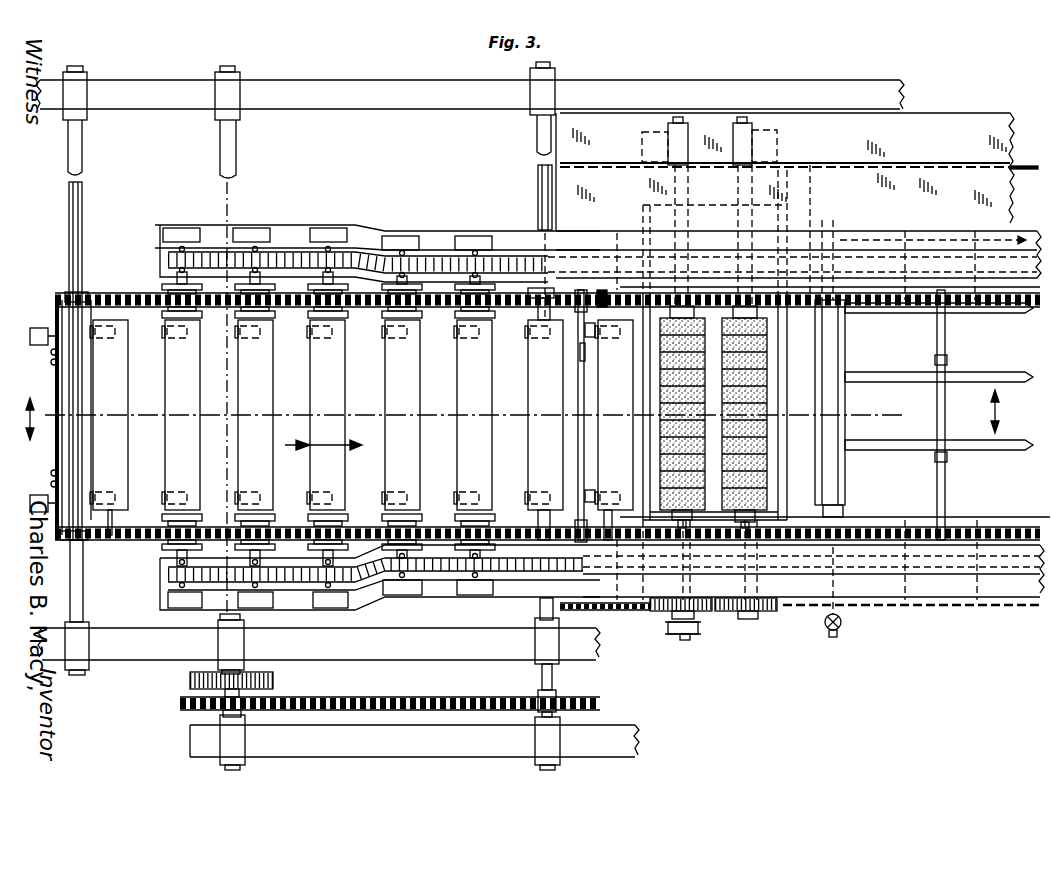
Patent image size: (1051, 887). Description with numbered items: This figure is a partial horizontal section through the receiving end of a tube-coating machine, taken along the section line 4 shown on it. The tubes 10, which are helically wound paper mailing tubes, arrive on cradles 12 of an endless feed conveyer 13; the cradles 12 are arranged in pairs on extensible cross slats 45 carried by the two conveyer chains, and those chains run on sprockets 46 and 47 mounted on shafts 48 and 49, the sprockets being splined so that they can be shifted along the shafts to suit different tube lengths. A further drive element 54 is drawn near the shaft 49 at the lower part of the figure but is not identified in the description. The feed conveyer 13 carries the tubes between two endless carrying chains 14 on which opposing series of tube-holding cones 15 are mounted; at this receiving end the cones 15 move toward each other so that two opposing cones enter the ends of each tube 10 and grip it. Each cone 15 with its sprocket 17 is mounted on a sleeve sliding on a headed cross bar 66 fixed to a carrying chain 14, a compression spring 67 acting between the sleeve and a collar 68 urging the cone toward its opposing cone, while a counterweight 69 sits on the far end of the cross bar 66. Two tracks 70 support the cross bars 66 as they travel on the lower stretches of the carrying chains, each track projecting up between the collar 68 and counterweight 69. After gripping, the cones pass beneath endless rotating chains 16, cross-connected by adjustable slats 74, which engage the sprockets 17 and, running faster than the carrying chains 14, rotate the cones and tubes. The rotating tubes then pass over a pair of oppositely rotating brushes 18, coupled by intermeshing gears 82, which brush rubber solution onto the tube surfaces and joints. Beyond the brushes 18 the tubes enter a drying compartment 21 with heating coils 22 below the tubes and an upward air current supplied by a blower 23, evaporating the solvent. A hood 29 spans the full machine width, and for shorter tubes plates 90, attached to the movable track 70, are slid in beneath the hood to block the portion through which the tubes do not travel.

The section line 4— 4 is at (519, 415).
The tube 10 is at (470, 456).
The cradle 12 is at (30, 338).
The feed conveyer 13 is at (118, 293).
The carrying chain 14 is at (213, 250).
The tube-holding cone 15 is at (453, 320).
The rotating chain 16 is at (889, 312).
The sprocket 17 is at (349, 313).
The brush 18 is at (700, 480).
The drying compartment 21 is at (810, 175).
The heating coil 22 is at (918, 350).
The blower 23 is at (789, 368).
The hood 29 is at (922, 163).
The extensible cross slat 45 is at (93, 398).
The sprocket 46 is at (60, 293).
The sprocket 47 is at (581, 290).
The shaft 48 is at (84, 582).
The shaft 49 is at (558, 690).
The chain 54 is at (395, 697).
The cross bar 66 is at (450, 252).
The compression spring 67 is at (280, 680).
The collar 68 is at (175, 283).
The counterweight 69 is at (325, 228).
The track 70 is at (163, 250).
The slat 74 is at (947, 485).
The intermeshing gear 82 is at (700, 612).
The plate 90 is at (972, 116).